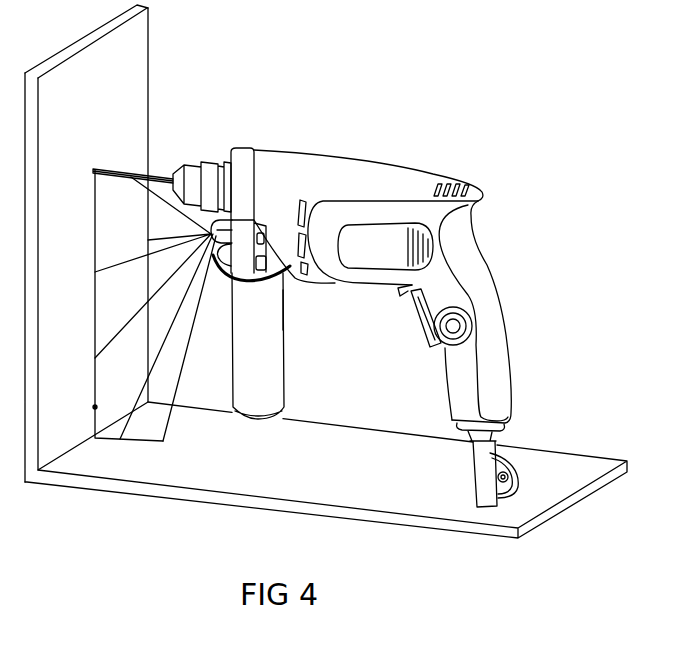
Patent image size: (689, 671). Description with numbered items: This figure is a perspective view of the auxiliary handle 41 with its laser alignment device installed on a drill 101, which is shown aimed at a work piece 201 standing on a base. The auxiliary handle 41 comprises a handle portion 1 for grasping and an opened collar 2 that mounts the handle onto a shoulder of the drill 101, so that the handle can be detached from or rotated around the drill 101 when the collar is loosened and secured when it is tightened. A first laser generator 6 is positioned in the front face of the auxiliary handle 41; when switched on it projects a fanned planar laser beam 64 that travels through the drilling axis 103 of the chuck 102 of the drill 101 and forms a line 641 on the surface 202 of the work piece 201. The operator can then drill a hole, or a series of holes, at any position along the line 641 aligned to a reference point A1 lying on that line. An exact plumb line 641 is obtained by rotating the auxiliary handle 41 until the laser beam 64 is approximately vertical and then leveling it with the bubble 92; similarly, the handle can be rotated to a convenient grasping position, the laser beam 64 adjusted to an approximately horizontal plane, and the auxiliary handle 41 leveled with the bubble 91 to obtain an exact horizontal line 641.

The work piece 201 is at (91, 38).
The surface 202 is at (133, 97).
The drilling axis 103 is at (137, 172).
The chuck 102 is at (207, 177).
The opened collar 2 is at (243, 182).
The drill 101 is at (337, 190).
The first laser generator 6 is at (195, 240).
The fanned planar beam 64 is at (170, 418).
The line 641 is at (93, 305).
The handle portion 1 is at (263, 355).
The auxiliary handle 41 is at (310, 345).
The bubble 91 is at (266, 268).
The bubble 92 is at (272, 280).
The reference point A1 is at (81, 407).